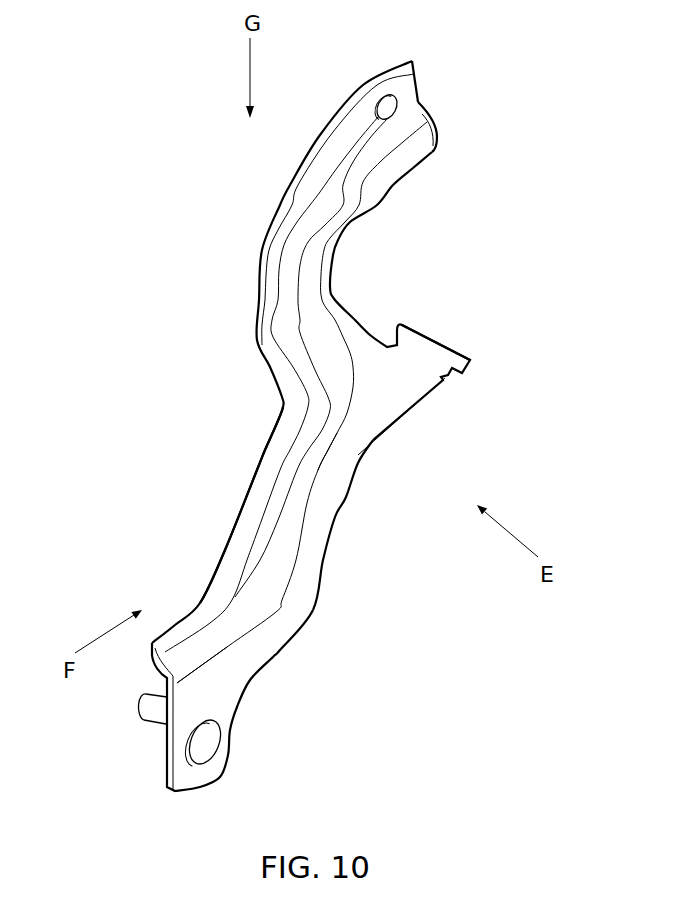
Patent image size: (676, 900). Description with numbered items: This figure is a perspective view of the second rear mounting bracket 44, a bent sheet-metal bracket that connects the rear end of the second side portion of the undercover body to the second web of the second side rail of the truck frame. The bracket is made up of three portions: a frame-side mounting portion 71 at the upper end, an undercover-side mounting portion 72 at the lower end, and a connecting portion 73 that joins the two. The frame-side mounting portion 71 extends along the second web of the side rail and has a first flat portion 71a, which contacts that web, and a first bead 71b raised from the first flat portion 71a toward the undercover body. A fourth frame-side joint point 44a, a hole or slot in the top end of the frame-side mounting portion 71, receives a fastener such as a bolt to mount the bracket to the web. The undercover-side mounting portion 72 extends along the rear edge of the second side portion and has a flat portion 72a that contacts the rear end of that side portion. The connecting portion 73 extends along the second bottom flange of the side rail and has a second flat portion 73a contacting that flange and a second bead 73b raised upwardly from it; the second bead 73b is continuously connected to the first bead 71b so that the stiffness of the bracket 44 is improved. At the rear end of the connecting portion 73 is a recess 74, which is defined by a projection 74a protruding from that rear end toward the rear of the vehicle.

The second rear mounting bracket 44 is at (114, 416).
The fourth frame-side joint point 44a is at (397, 105).
The frame-side mounting portion 71 is at (423, 164).
The first flat portion 71a is at (412, 80).
The first bead 71b is at (427, 153).
The undercover-side mounting portion 72 is at (244, 700).
The flat portion 72a is at (230, 667).
The connecting portion 73 is at (306, 508).
The second flat portion 73a is at (258, 489).
The second bead 73b is at (343, 462).
The recess 74 is at (431, 361).
The projection 74a is at (447, 347).